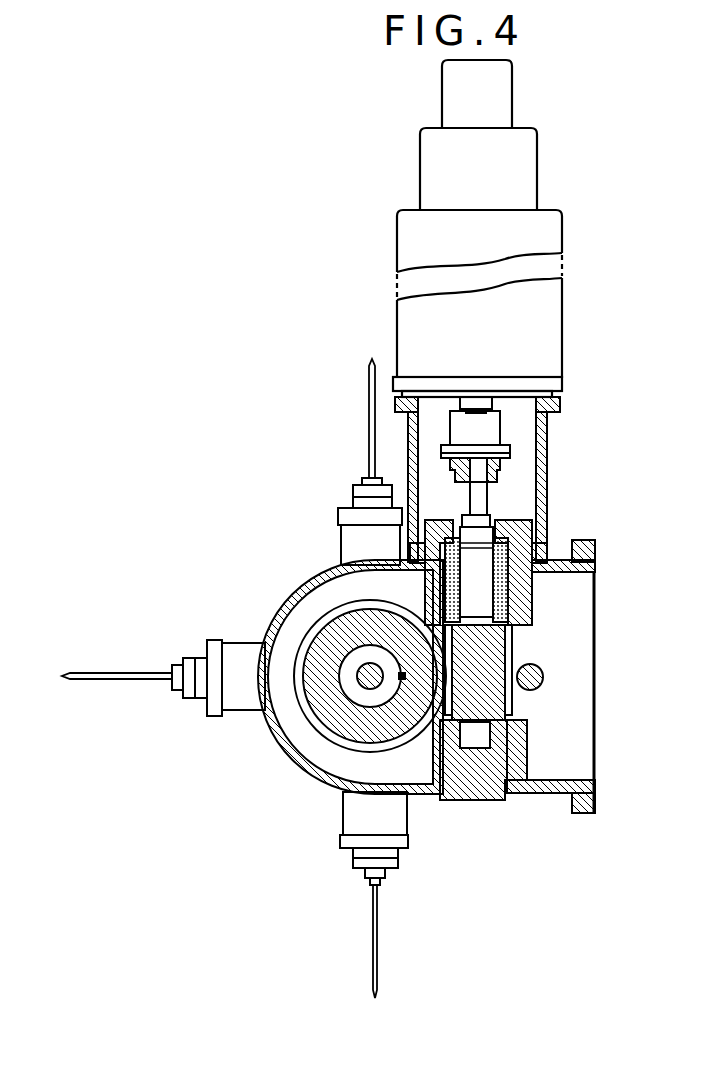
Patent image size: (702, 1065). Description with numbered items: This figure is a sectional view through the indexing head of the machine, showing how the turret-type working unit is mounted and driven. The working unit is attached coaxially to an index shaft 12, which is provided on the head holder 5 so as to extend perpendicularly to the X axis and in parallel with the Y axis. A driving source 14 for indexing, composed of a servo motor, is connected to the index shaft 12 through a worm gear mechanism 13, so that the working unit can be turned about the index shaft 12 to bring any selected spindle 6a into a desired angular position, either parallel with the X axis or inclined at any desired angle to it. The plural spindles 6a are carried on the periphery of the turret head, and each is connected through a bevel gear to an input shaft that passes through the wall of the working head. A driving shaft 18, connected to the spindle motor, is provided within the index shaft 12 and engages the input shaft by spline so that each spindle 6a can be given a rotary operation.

The driving source 14 is at (430, 160).
The head holder 5 is at (537, 795).
The worm gear mechanism 13 is at (420, 750).
The spindle 6a is at (108, 672).
The driving shaft 18 is at (360, 700).
The index shaft 12 is at (370, 703).